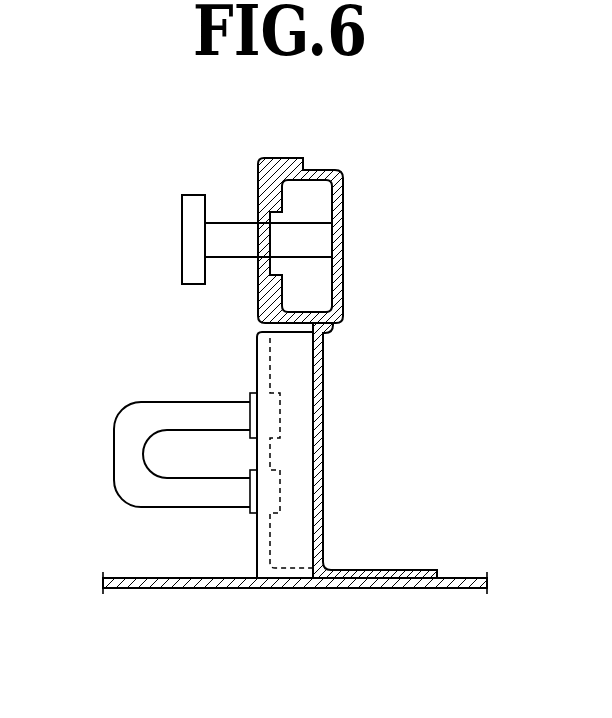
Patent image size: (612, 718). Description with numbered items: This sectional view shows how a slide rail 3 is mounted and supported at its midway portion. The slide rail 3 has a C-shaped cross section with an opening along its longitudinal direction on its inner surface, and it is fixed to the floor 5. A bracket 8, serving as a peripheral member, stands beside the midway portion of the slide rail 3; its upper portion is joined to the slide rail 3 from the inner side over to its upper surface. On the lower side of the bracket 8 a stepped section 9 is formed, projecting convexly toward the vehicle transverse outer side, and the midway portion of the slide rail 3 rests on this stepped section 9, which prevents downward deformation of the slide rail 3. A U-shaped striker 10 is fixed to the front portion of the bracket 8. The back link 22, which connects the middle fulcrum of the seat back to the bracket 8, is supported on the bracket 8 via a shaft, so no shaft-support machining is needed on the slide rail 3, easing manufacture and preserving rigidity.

The slide rail 3 is at (345, 212).
The back link 22 is at (182, 232).
The stepped section 9 is at (290, 333).
The bracket 8 is at (257, 540).
The U-shaped striker 10 is at (113, 450).
The floor 5 is at (142, 572).